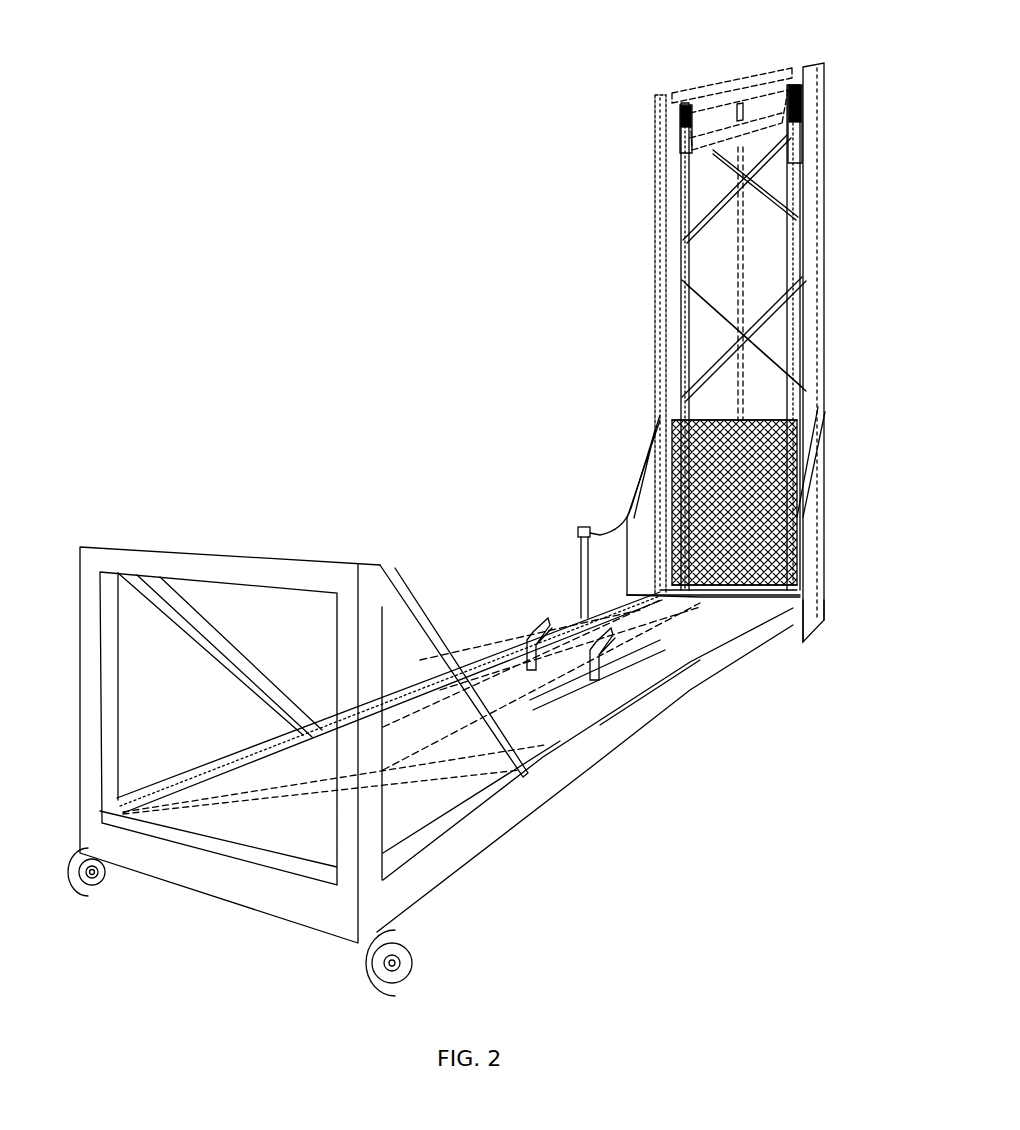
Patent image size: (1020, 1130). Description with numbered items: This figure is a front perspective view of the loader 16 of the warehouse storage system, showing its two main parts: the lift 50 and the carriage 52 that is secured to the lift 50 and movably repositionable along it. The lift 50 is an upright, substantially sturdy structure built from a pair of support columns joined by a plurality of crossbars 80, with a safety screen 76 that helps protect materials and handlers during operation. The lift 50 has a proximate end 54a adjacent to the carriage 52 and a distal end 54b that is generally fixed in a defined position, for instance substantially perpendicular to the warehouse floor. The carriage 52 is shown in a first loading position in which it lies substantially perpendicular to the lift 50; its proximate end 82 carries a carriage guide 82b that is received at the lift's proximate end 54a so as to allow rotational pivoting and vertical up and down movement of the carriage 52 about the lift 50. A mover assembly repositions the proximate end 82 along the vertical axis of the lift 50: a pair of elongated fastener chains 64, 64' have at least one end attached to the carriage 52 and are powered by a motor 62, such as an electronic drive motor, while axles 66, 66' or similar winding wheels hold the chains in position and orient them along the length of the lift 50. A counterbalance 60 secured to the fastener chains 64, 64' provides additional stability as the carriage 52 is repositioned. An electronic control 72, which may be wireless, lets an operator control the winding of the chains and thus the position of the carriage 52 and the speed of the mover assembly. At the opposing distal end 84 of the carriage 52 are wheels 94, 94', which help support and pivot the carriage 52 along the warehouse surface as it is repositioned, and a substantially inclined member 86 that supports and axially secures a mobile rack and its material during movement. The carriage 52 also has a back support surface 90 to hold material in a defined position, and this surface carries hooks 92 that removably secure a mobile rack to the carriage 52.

The loader 16 is at (430, 233).
The lift 50 is at (655, 230).
The carriage 52 is at (520, 640).
The proximate end 54a is at (826, 637).
The distal end 54b is at (812, 88).
The counterbalance 60 is at (766, 125).
The motor 62 is at (627, 465).
The fastener chain 64 is at (642, 346).
The fastener chain 64' is at (836, 337).
The axle 66 is at (636, 95).
The axle 66' is at (819, 83).
The electronic control 72 is at (578, 530).
The safety screen 76 is at (784, 420).
The crossbar 80 is at (780, 188).
The proximate end 82 is at (727, 657).
The carriage guide 82b is at (723, 590).
The distal end 84 is at (430, 883).
The inclined member 86 is at (290, 585).
The back support surface 90 is at (617, 637).
The hook 92 is at (603, 652).
The wheel 94 is at (127, 890).
The wheel 94' is at (443, 963).